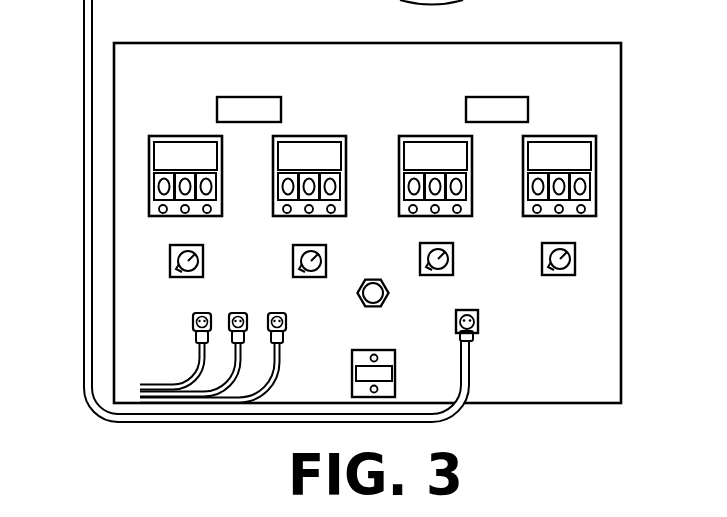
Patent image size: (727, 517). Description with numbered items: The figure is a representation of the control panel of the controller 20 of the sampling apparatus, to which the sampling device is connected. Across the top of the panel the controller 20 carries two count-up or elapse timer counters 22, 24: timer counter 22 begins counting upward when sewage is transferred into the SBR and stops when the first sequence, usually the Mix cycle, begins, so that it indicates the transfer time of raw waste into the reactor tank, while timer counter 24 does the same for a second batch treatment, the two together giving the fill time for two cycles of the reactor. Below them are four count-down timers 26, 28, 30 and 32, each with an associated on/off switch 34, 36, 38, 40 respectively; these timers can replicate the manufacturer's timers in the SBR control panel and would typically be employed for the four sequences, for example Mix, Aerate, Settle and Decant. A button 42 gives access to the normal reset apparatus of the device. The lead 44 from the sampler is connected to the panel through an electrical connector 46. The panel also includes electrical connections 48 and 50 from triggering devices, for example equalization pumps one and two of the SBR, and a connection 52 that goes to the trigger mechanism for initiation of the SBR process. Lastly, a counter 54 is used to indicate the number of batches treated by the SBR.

The controller 20 is at (628, 127).
The count up timer 22 is at (282, 109).
The count up timer 24 is at (466, 111).
The count down timer 26 is at (163, 136).
The count down timer 28 is at (273, 161).
The count down timer 30 is at (399, 153).
The count down timer 32 is at (577, 136).
The on/off switch 34 is at (170, 261).
The on/off switch 36 is at (293, 261).
The on/off switch 38 is at (420, 260).
The on/off switch 40 is at (542, 260).
The button 42 is at (389, 293).
The lead 44 is at (84, 69).
The electrical connector 46 is at (474, 340).
The electrical connection 48 is at (194, 313).
The electrical connection 50 is at (238, 312).
The connection 52 is at (283, 313).
The counter 54 is at (396, 372).